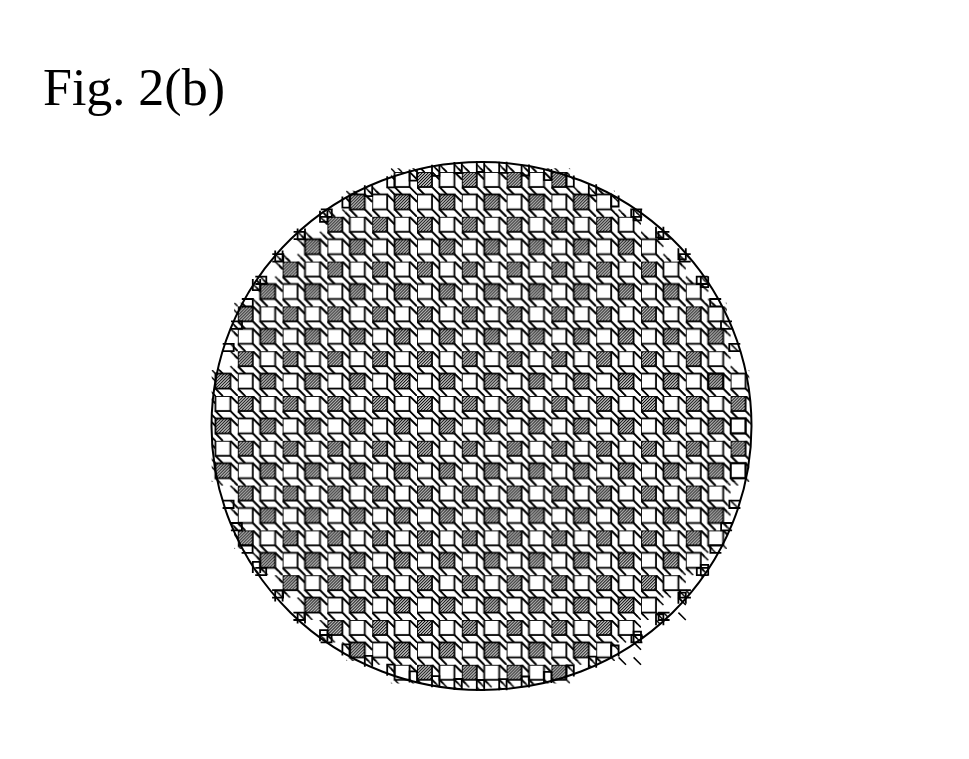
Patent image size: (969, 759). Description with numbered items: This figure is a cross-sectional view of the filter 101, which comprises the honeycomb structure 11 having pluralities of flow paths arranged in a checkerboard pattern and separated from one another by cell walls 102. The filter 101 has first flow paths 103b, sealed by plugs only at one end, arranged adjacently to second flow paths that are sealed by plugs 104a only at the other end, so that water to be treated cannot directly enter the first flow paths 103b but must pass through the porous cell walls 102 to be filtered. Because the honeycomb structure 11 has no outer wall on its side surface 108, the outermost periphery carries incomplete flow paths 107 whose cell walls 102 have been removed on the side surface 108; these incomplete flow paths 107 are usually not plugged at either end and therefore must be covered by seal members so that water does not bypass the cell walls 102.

The honeycomb structure 11 is at (728, 539).
The filter 101 is at (726, 253).
The cell wall 102 is at (738, 468).
The first flow path 103b is at (740, 426).
The plug 104a is at (717, 384).
The incomplete flow path 107 is at (630, 652).
The side surface 108 is at (683, 612).